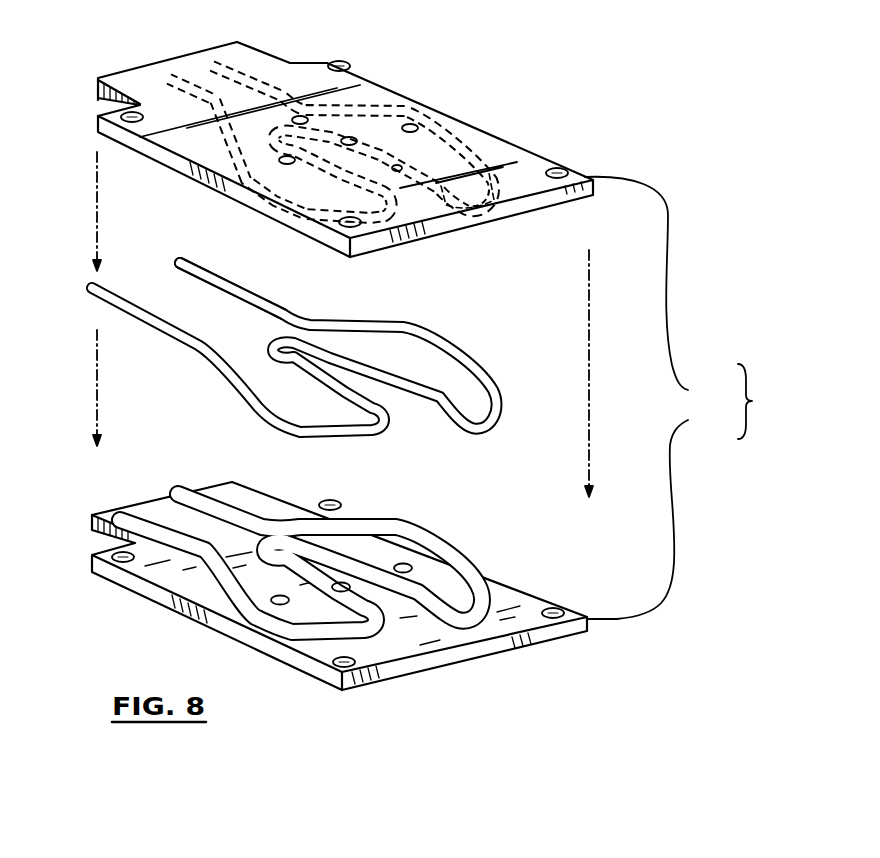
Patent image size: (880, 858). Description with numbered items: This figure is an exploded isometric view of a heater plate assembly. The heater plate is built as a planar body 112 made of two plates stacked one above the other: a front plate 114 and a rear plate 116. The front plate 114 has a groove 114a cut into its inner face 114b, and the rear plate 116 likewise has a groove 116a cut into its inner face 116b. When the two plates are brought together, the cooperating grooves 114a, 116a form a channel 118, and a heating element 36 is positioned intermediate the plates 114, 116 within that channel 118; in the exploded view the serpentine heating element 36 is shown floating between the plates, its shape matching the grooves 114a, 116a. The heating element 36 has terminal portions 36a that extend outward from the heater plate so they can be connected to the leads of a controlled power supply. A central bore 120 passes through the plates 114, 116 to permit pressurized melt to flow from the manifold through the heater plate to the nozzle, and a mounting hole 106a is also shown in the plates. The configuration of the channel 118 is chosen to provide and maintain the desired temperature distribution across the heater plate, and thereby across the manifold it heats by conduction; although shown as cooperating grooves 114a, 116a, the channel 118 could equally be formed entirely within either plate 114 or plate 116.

The heating element 36 is at (329, 318).
The terminal portions 36a is at (181, 262).
The mounting hole 106a is at (346, 60).
The planar body 112 is at (767, 401).
The front plate 114 is at (659, 290).
The groove 114a is at (437, 236).
The inner face 114b is at (538, 212).
The rear plate 116 is at (660, 512).
The groove 116a is at (462, 550).
The inner face 116b is at (530, 598).
The channel 118 is at (503, 351).
The central bore 120 is at (350, 138).